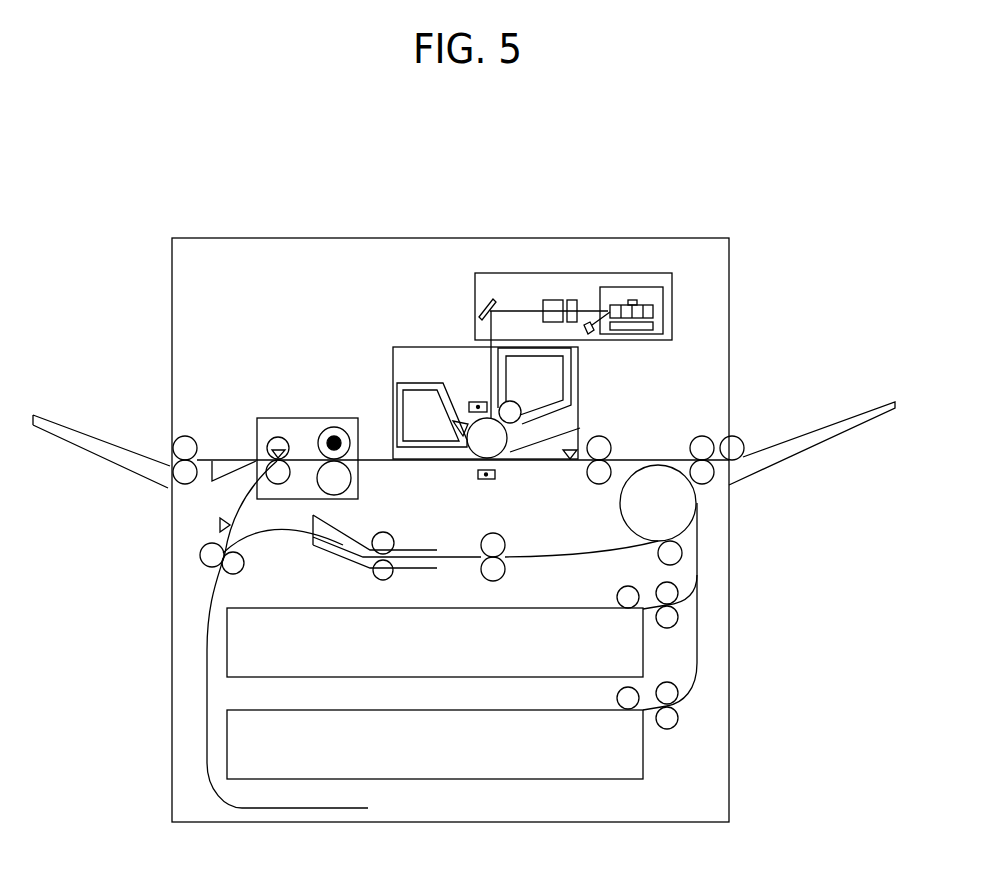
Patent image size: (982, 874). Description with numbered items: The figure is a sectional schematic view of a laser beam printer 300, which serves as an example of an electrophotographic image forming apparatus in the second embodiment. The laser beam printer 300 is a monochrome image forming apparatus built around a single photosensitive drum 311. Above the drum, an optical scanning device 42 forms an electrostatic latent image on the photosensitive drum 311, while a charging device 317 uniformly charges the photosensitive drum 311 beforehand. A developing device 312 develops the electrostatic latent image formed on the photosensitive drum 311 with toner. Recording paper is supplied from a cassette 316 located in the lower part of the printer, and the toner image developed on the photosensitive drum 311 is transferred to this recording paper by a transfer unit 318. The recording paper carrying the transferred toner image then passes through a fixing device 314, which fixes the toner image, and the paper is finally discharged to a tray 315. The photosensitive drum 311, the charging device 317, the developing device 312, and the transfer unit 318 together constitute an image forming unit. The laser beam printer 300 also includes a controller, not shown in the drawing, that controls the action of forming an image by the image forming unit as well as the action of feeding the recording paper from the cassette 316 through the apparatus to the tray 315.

The laser beam printer 300 is at (623, 238).
The optical scanning device 42 is at (676, 300).
The tray 315 is at (88, 437).
The fixing device 314 is at (307, 418).
The charging device 317 is at (483, 402).
The photosensitive drum 311 is at (497, 440).
The developing device 312 is at (512, 410).
The transfer unit 318 is at (495, 476).
The cassette 316 is at (628, 760).